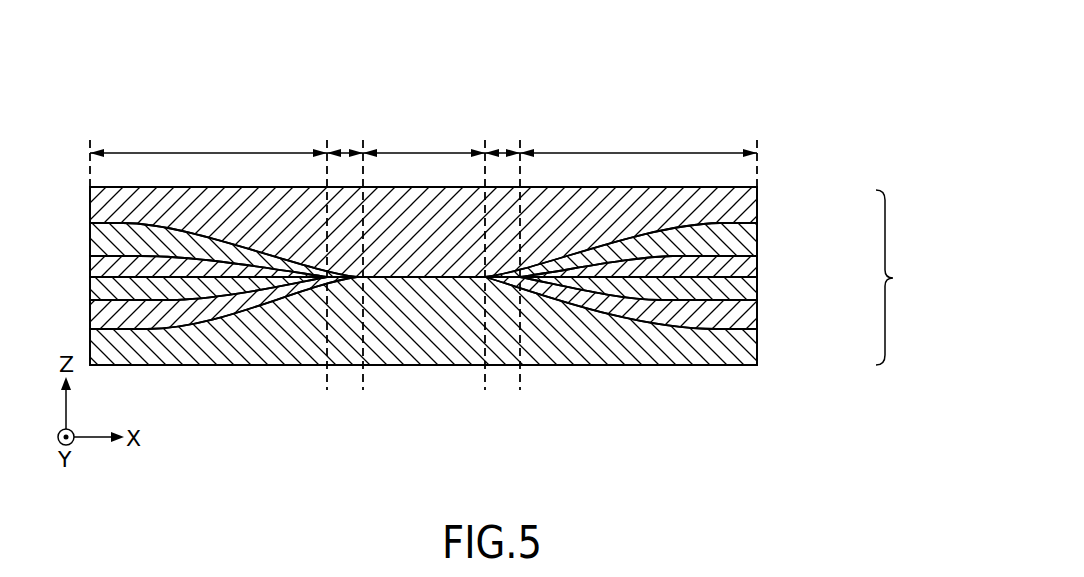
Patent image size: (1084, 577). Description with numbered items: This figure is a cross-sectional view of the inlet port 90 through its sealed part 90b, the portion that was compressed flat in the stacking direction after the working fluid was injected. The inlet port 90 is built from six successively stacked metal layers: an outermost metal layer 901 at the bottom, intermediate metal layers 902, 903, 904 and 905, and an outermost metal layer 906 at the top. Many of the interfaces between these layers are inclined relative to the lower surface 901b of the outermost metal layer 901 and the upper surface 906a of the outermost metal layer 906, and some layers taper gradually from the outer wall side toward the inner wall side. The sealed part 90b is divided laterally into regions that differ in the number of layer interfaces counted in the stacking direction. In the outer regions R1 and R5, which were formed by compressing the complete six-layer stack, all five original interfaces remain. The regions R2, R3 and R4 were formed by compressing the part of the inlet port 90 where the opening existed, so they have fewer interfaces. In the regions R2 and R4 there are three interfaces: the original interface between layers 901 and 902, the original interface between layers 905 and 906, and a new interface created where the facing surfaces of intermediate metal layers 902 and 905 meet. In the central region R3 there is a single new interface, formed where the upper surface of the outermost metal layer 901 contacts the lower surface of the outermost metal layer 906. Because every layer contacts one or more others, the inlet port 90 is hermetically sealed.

The inlet port 90 is at (812, 138).
The sealed part 90b is at (911, 277).
The outermost metal layer 901 is at (773, 343).
The intermediate metal layer 902 is at (773, 313).
The intermediate metal layer 903 is at (773, 287).
The intermediate metal layer 904 is at (773, 262).
The intermediate metal layer 905 is at (773, 233).
The outermost metal layer 906 is at (773, 203).
The upper surface of outermost metal layer 906a is at (740, 187).
The lower surface of outermost metal layer 901b is at (745, 366).
The region R1 is at (208, 138).
The region R2 is at (345, 138).
The region R3 is at (424, 138).
The region R4 is at (502, 138).
The region R5 is at (638, 138).